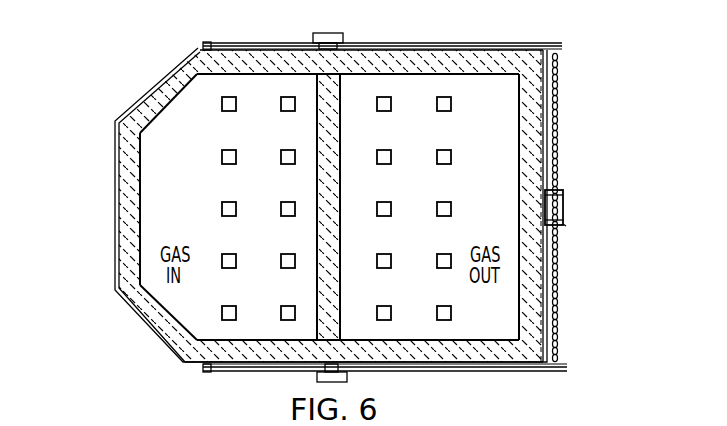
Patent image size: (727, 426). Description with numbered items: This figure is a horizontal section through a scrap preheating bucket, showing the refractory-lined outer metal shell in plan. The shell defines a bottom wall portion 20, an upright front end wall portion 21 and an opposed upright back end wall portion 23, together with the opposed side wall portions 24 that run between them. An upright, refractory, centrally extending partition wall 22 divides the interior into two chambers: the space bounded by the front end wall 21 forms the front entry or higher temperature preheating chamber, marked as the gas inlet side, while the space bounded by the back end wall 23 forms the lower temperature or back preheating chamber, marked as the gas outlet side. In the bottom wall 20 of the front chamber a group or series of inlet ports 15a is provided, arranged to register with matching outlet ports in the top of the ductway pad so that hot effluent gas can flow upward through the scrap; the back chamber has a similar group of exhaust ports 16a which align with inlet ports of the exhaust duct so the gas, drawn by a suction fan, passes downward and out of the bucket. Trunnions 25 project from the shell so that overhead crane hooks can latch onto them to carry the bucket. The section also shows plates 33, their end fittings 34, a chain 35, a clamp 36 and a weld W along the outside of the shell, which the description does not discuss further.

The bottom wall portion 20 is at (474, 83).
The front end wall portion 21 is at (120, 210).
The partition wall 22 is at (343, 166).
The back end wall portion 23 is at (540, 103).
The side wall portions 24 is at (387, 50).
The trunnions 25 is at (325, 33).
The clamping plate 33 is at (471, 390).
The plate end 34 is at (207, 43).
The chain 35 is at (557, 141).
The clamp 36 is at (564, 205).
The weld W is at (565, 225).
The inlet ports 15a is at (281, 158).
The exhaust ports 16a is at (437, 158).